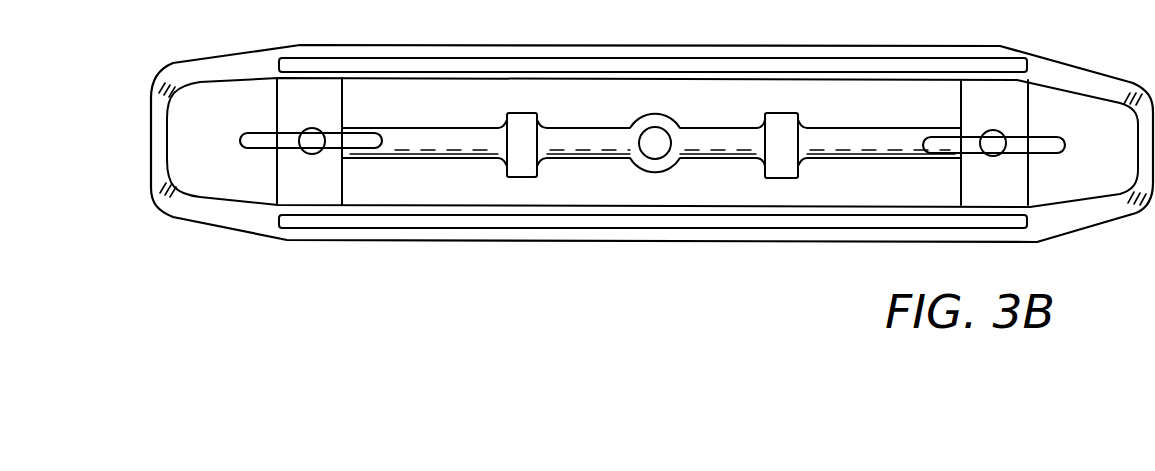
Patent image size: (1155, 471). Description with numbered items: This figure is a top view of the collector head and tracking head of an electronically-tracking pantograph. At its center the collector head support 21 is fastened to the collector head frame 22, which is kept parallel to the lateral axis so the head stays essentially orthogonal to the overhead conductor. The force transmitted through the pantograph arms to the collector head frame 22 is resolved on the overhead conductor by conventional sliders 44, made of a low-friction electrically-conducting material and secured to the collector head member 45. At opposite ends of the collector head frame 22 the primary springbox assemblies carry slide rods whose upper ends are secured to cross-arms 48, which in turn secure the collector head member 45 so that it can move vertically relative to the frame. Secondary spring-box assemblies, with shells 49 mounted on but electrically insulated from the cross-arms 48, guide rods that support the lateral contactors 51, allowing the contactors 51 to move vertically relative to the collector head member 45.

The collector head support 21 is at (645, 152).
The collector head frame 22 is at (853, 152).
The sliders 44 is at (455, 62).
The collector head member 45 is at (233, 213).
The cross-arms 48 is at (302, 100).
The shells 49 is at (303, 155).
The lateral contactors 51 is at (355, 140).